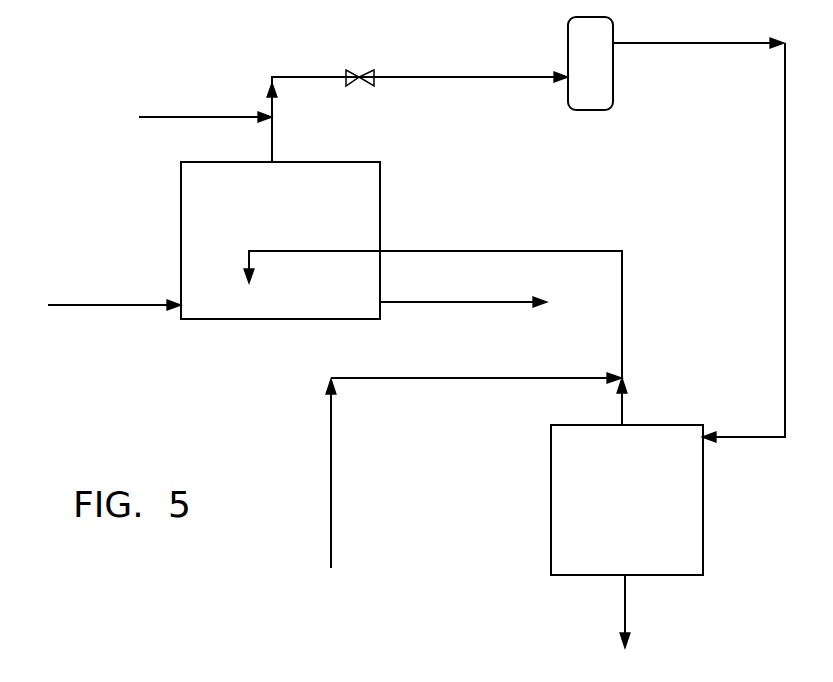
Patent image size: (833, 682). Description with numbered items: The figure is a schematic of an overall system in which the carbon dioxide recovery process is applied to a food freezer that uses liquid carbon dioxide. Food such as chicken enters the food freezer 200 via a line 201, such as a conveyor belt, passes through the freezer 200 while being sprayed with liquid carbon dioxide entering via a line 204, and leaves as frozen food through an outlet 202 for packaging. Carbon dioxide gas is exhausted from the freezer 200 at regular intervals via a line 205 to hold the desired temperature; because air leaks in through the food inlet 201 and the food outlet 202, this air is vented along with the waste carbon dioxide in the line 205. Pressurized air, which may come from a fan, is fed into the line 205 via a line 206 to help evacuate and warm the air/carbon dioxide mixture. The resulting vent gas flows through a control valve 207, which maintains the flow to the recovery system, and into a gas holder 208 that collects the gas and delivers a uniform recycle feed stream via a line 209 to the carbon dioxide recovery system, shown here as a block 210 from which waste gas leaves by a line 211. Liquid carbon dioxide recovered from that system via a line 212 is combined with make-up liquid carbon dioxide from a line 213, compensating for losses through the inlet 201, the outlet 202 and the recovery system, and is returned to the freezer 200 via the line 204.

The food freezer 200 is at (381, 183).
The line 201 is at (114, 296).
The outlet 202 is at (463, 293).
The line 204 is at (433, 325).
The line 205 is at (274, 136).
The line 206 is at (205, 109).
The control valve 207 is at (359, 65).
The gas holder 208 is at (590, 63).
The line 209 is at (720, 240).
The liquid CO2 product vessel 210 is at (703, 509).
The waste gas line 211 is at (691, 619).
The line 212 is at (620, 407).
The line 213 is at (474, 470).